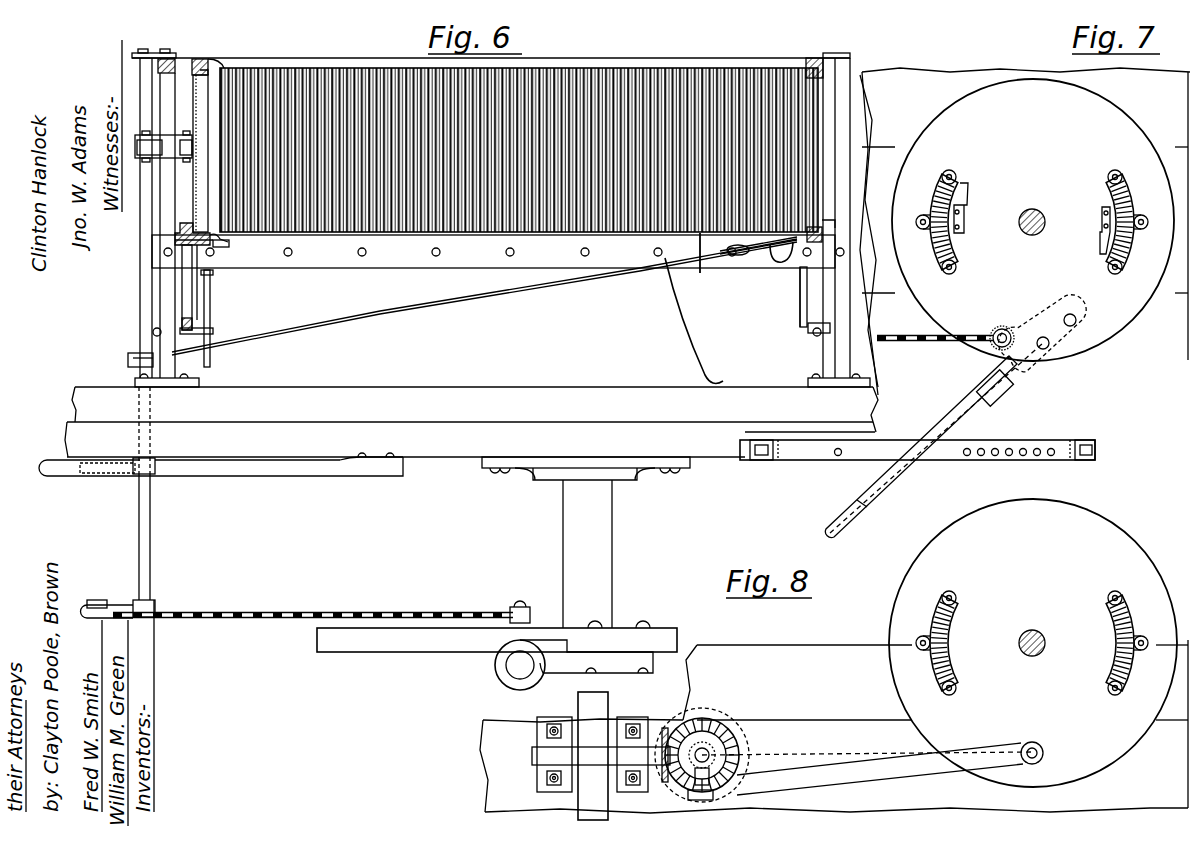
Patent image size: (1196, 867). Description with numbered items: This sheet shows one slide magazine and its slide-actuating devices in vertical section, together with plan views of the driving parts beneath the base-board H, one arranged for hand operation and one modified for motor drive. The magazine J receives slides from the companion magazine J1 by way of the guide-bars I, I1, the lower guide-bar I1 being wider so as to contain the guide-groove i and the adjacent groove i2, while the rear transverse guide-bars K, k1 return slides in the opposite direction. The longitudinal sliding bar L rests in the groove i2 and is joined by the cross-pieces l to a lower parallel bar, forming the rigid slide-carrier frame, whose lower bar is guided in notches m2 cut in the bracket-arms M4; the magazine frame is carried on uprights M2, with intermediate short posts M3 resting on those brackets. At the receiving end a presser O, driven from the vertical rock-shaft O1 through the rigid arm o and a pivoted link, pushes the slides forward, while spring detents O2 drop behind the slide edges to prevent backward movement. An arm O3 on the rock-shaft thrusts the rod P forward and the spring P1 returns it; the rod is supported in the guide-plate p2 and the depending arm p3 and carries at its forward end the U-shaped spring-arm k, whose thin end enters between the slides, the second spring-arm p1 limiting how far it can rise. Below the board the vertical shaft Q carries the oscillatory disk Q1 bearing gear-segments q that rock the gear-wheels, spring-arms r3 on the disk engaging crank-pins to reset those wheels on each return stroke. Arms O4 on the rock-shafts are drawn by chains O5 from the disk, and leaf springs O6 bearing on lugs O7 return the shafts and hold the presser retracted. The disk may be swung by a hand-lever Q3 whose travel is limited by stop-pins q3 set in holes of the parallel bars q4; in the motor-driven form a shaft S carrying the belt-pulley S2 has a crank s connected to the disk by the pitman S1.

In FIG. 6, the slide magazine J is at (580, 66).
In FIG. 6, the slide magazine J1 is at (698, 48).
In FIG. 6, the guide-bar I is at (210, 31).
In FIG. 6, the lower guide-bar I1 is at (222, 246).
In FIG. 6, the transverse guide-bar K is at (814, 58).
In FIG. 6, the transverse guide-bar k1 is at (818, 228).
In FIG. 6, the presser O is at (200, 105).
In FIG. 6, the rock-shaft O1 is at (178, 160).
In FIG. 6, the spring detents O2 is at (210, 62).
In FIG. 6, the arm O3 is at (128, 360).
In FIG. 6, the arm O4 is at (103, 608).
In FIG. 6, the chain O5 is at (302, 613).
In FIG. 7, the chain O5 is at (922, 341).
In FIG. 6, the leaf spring O6 is at (258, 470).
In FIG. 6, the lug O7 is at (114, 466).
In FIG. 6, the rigid arm o is at (136, 145).
In FIG. 6, the sliding bar L is at (178, 228).
In FIG. 6, the guide-groove i is at (216, 236).
In FIG. 6, the groove i2 is at (178, 241).
In FIG. 6, the uprights M2 is at (166, 285).
In FIG. 6, the short posts M3 is at (186, 297).
In FIG. 6, the bracket-arms M4 is at (196, 331).
In FIG. 6, the notches m2 is at (187, 334).
In FIG. 6, the depending arm p3 is at (204, 345).
In FIG. 6, the rod P is at (468, 294).
In FIG. 6, the spring P1 is at (680, 318).
In FIG. 6, the guide-plate p2 is at (703, 270).
In FIG. 6, the second spring-arm p1 is at (768, 257).
In FIG. 6, the hook k is at (789, 262).
In FIG. 6, the cross-pieces l is at (812, 300).
In FIG. 6, the base frame H is at (471, 266).
In FIG. 6, the vertical shaft Q is at (586, 542).
In FIG. 7, the vertical shaft Q is at (1030, 234).
In FIG. 8, the vertical shaft Q is at (1031, 656).
In FIG. 6, the oscillatory disk Q1 is at (390, 645).
In FIG. 7, the oscillatory disk Q1 is at (1033, 220).
In FIG. 8, the oscillatory disk Q1 is at (1033, 643).
In FIG. 6, the hand-lever Q3 is at (500, 674).
In FIG. 7, the hand-lever Q3 is at (984, 392).
In FIG. 7, the gear-segments q is at (950, 248).
In FIG. 8, the gear-segments q is at (947, 631).
In FIG. 7, the stops q3 is at (838, 456).
In FIG. 7, the parallel bars q4 is at (800, 461).
In FIG. 7, the spring-arms r3 is at (968, 192).
In FIG. 8, the shaft S is at (718, 751).
In FIG. 8, the pitman S1 is at (850, 772).
In FIG. 8, the belt-pulley S2 is at (598, 706).
In FIG. 8, the crank s is at (718, 788).